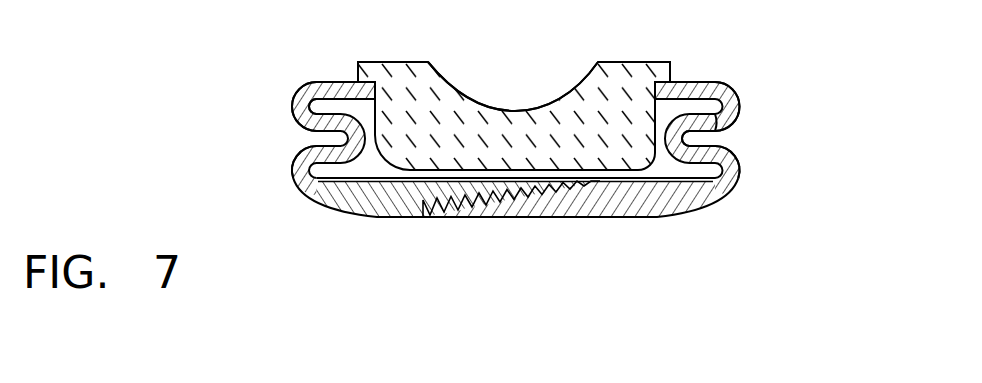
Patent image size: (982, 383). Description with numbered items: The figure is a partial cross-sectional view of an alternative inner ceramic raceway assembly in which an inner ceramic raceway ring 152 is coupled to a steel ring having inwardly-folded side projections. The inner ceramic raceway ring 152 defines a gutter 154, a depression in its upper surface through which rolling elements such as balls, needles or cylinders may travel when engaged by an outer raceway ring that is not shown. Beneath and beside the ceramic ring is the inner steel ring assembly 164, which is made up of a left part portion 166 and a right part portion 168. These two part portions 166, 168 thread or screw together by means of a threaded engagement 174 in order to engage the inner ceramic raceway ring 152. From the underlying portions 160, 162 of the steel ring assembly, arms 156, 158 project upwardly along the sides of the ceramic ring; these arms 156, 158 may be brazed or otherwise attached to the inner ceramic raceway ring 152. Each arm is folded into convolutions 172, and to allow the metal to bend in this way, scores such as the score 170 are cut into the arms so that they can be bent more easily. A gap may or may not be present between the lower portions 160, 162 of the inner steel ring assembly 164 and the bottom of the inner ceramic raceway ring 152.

The inner ceramic raceway ring 152 is at (398, 68).
The gutter 154 is at (513, 108).
The arm 156 is at (306, 83).
The arm 158 is at (682, 82).
The underlying portion 160 is at (323, 203).
The underlying portion 162 is at (677, 215).
The inner steel ring assembly 164 is at (292, 192).
The left part portion 166 is at (232, 112).
The right part portion 168 is at (753, 102).
The score 170 is at (738, 130).
The convolutions 172 is at (297, 125).
The threaded engagement 174 is at (467, 216).